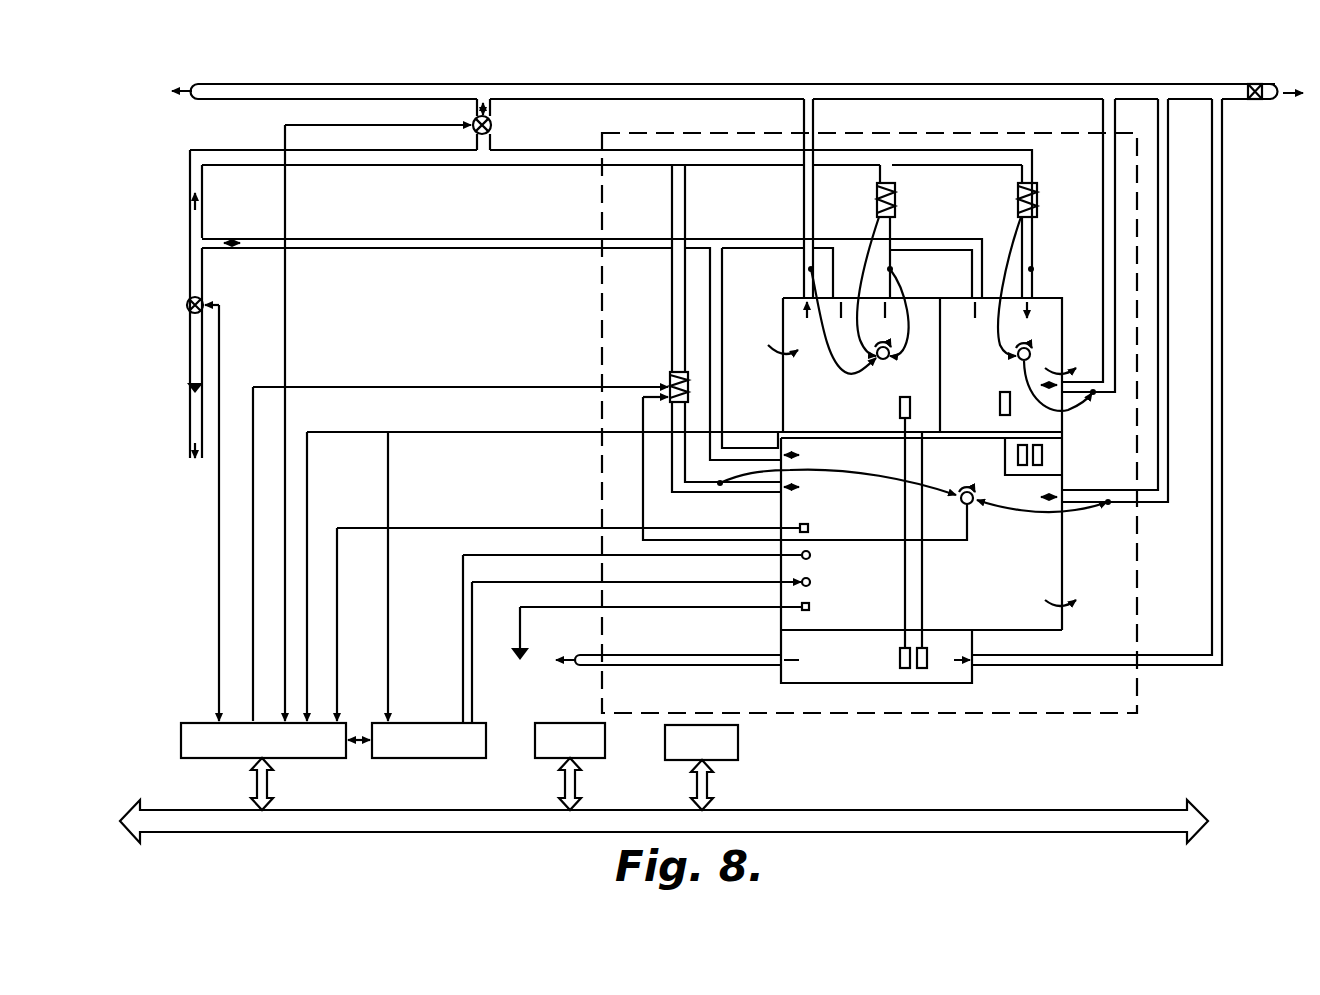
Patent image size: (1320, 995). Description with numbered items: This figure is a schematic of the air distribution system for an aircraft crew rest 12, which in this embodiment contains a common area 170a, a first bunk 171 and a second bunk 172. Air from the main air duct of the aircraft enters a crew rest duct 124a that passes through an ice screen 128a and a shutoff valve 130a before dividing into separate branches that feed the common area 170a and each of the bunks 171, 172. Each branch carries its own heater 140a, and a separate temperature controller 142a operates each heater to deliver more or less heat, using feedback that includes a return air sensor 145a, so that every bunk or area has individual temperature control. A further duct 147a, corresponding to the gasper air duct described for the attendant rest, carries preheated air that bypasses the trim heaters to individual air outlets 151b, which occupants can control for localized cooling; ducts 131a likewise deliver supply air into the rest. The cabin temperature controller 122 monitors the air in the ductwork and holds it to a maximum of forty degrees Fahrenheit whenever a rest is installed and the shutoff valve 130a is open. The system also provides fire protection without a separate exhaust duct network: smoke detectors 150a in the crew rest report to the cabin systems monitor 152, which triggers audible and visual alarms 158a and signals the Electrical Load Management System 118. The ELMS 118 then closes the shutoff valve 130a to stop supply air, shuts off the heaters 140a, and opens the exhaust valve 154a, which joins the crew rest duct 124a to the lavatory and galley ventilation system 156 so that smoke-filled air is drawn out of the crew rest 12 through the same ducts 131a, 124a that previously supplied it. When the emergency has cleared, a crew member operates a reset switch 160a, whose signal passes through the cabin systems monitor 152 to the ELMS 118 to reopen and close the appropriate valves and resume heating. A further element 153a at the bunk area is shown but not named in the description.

The lavatory/galley ventilation system 156 is at (986, 84).
The exhaust valve 154a is at (494, 126).
The crew rest duct 124a is at (494, 167).
The return line 147a is at (437, 250).
The duct 131a is at (688, 182).
The heater 140a is at (896, 202).
The return air sensor 145a is at (893, 268).
The temperature controller 142a is at (888, 360).
The shutoff valve 130a is at (189, 302).
The ice screen 128a is at (187, 388).
The smoke detector 150a is at (1003, 390).
The individual air outlets 151b is at (779, 440).
The first bunk 171 is at (828, 419).
The second bunk 172 is at (983, 419).
The drain line 153a is at (1062, 430).
The reservoir tank 170a is at (988, 598).
The reset switch 160a is at (810, 528).
The alarms 158a is at (811, 555).
The crew rest 12 is at (1137, 688).
The Electrical Load Management System (ELMS) 118 is at (277, 752).
The cabin systems monitor 152 is at (443, 752).
The cabin temperature controller (CTC) 122 is at (585, 752).